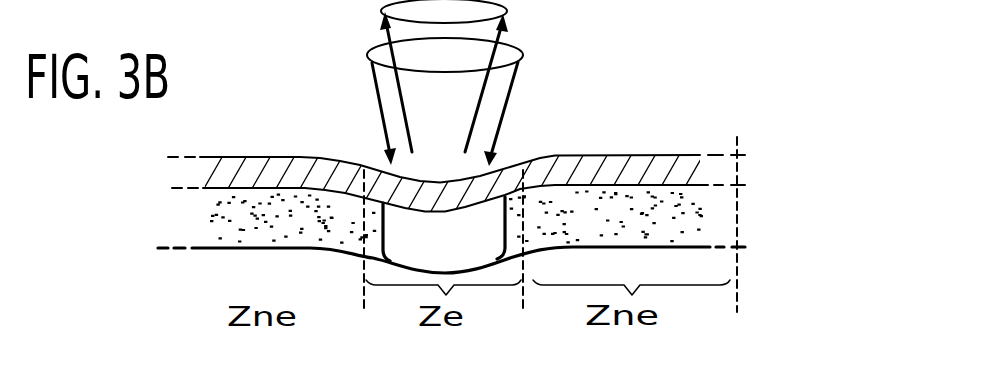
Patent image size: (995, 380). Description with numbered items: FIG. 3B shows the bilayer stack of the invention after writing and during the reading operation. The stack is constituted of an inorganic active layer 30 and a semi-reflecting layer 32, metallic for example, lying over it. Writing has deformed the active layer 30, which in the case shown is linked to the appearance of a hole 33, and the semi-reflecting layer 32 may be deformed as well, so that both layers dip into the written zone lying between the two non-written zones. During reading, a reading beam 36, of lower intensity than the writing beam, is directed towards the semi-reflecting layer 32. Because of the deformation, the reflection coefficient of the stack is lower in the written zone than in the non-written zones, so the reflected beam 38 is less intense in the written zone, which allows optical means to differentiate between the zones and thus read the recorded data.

The active layer 30 is at (658, 202).
The semi-reflecting layer 32 is at (598, 168).
The hole 33 is at (400, 235).
The reading beam 36 is at (377, 93).
The reflected beam 38 is at (383, 42).